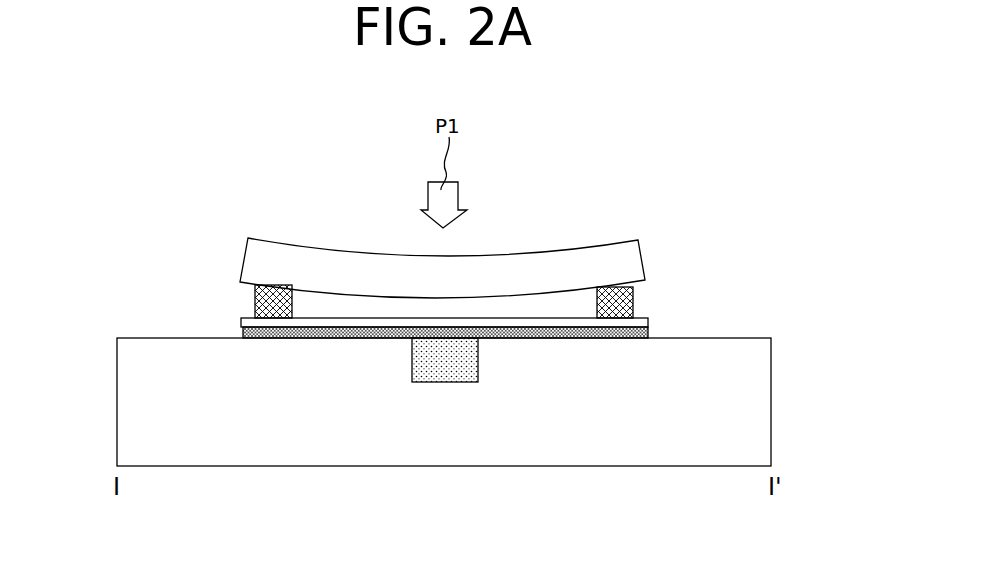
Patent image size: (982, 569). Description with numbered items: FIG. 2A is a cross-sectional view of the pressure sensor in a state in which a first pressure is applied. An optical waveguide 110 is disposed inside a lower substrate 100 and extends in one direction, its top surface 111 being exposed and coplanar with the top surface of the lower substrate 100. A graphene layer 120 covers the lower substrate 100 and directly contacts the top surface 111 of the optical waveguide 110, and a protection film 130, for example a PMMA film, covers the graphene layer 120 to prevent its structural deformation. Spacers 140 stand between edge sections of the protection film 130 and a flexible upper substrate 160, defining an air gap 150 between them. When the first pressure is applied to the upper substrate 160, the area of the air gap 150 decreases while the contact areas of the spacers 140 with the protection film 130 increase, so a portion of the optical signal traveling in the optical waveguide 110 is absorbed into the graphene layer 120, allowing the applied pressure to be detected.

The lower substrate 100 is at (758, 403).
The optical waveguide 110 is at (433, 383).
The top surface of the optical waveguide 111 is at (464, 336).
The graphene layer 120 is at (636, 332).
The protection film 130 is at (640, 316).
The spacers 140 is at (637, 292).
The air gap 150 is at (537, 305).
The upper substrate 160 is at (628, 260).